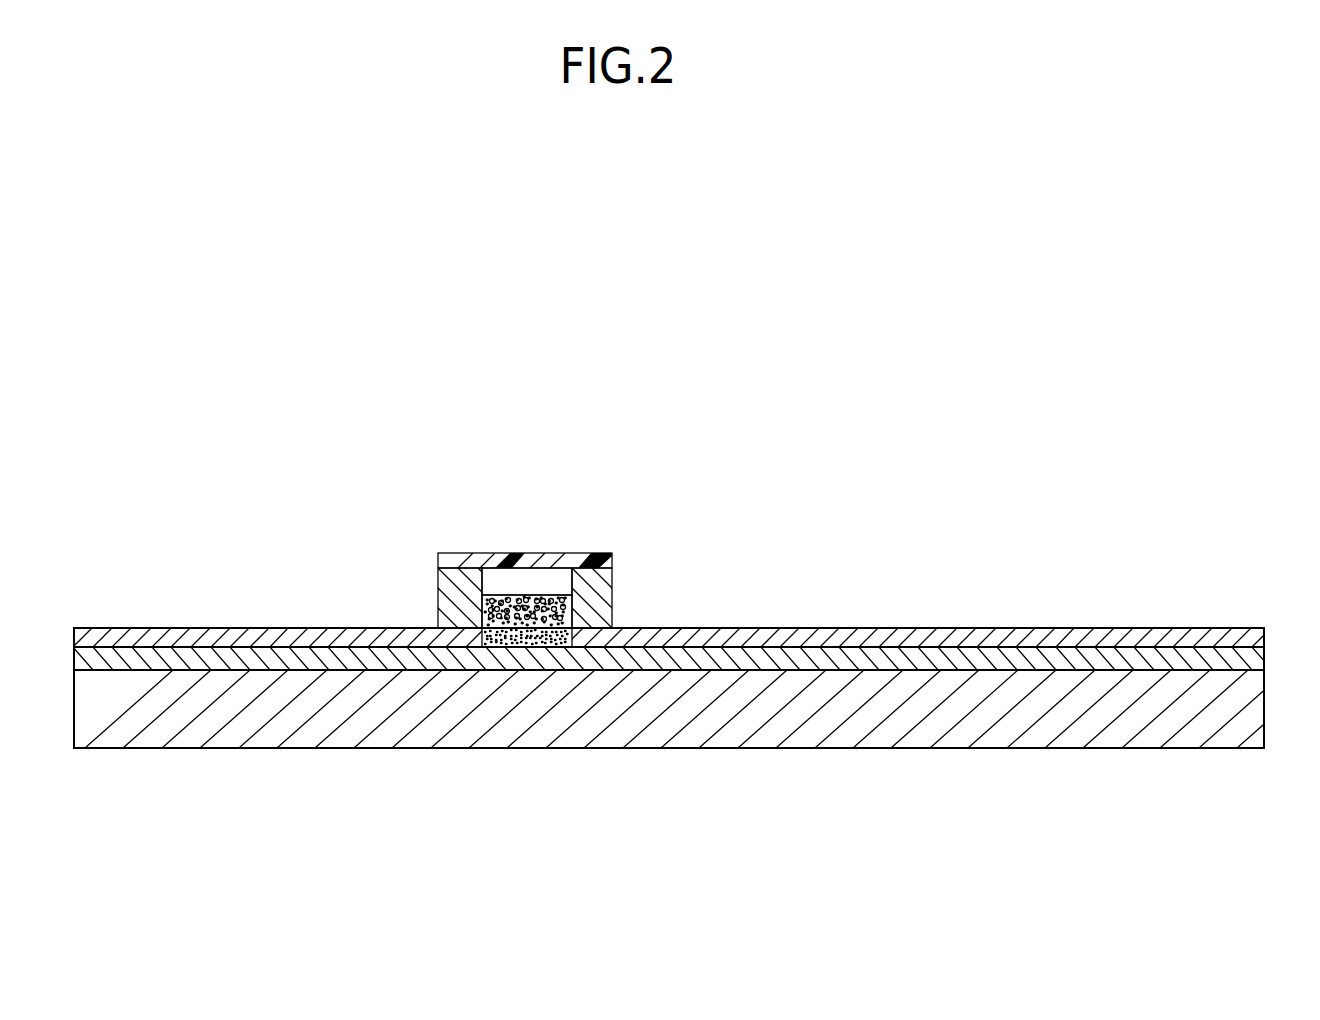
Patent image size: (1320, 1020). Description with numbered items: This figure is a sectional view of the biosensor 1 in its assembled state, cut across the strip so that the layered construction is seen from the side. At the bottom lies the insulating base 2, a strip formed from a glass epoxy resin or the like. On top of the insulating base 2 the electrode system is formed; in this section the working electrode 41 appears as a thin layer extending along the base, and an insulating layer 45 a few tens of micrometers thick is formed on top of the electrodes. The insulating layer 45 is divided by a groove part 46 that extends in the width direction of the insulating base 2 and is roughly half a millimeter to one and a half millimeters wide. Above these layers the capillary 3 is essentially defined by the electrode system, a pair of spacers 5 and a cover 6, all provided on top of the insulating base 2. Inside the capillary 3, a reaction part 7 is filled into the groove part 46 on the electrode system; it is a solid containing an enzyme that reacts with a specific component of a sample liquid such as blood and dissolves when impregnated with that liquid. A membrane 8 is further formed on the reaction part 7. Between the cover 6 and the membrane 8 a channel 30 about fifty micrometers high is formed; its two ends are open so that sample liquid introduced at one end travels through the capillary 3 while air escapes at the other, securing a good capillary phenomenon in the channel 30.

The biosensor 1 is at (696, 593).
The insulating base 2 is at (730, 727).
The capillary 3 is at (541, 544).
The spacer 5 is at (448, 590).
The cover 6 is at (537, 518).
The reaction part 7 is at (481, 617).
The membrane 8 is at (483, 593).
The channel 30 is at (552, 577).
The working electrode 41 is at (1038, 660).
The insulating layer 45 is at (256, 627).
The groove part 46 is at (563, 646).